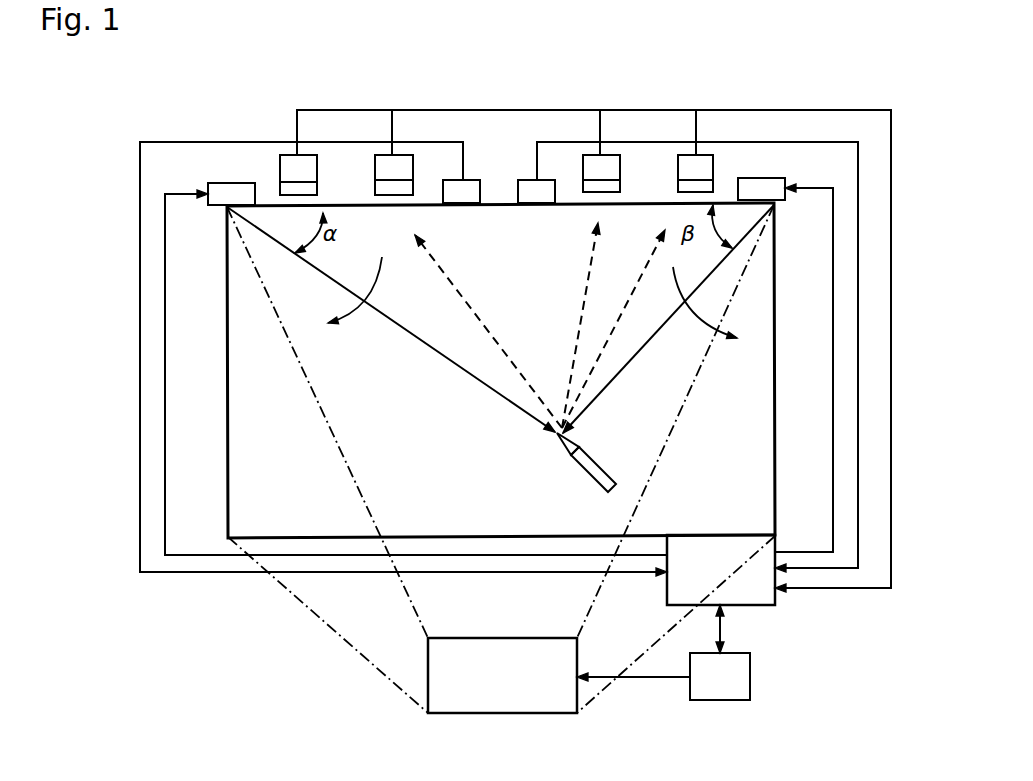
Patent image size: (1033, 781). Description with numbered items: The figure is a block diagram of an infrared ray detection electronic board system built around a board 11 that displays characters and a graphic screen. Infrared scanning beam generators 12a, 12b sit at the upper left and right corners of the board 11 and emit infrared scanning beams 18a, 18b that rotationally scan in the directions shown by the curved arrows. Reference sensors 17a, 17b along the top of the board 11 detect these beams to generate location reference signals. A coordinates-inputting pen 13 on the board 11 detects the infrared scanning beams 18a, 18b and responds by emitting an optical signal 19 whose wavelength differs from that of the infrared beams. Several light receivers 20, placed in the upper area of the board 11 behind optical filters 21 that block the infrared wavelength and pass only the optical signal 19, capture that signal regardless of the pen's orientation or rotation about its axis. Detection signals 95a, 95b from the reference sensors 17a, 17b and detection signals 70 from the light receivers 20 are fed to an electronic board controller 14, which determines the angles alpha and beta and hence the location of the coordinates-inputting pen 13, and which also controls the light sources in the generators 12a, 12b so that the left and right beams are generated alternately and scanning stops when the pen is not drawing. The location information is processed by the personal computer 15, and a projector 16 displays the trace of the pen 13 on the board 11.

The board 11 is at (237, 383).
The infrared scanning beam generator 12a is at (238, 187).
The infrared scanning beam generator 12b is at (762, 182).
The coordinates-inputting pen 13 is at (592, 473).
The electronic board controller 14 is at (770, 607).
The personal computer 15 is at (723, 698).
The projector 16 is at (505, 710).
The reference sensor 17a is at (455, 205).
The reference sensor 17b is at (540, 205).
The infrared scanning beam 18a is at (390, 324).
The infrared scanning beam 18b is at (623, 368).
The optical signal 19 is at (573, 347).
The light receiver 20 is at (290, 163).
The optical filter 21 is at (312, 185).
The detection signals 70 is at (843, 108).
The detection signal 95a is at (193, 575).
The detection signal 95b is at (848, 590).